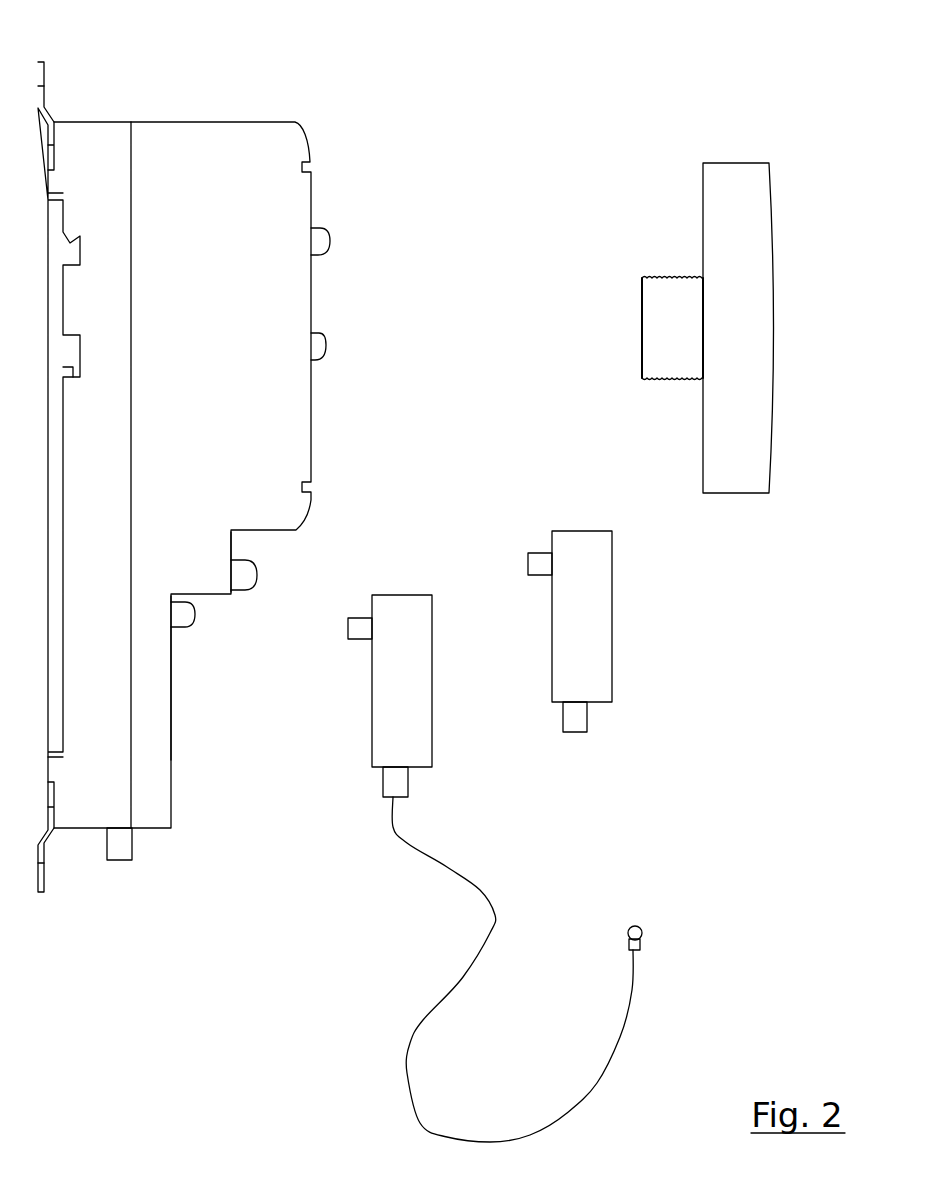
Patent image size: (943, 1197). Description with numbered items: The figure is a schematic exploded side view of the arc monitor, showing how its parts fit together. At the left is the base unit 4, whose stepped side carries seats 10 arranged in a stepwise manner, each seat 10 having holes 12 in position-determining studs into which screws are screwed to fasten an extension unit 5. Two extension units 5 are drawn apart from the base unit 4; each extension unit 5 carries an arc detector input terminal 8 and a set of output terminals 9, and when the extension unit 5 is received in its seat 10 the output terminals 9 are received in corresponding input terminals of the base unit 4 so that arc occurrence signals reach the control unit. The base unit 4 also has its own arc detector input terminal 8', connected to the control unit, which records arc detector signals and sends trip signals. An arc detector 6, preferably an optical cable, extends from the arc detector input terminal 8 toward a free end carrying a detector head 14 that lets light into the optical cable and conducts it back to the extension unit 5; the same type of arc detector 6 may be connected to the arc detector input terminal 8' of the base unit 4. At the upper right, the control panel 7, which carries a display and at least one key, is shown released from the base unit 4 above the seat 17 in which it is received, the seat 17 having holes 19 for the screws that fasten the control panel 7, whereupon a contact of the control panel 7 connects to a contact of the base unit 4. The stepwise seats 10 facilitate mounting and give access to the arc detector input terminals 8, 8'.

The base unit 4 is at (185, 155).
The extension unit 5 is at (422, 623).
The arc detector 6 is at (422, 1123).
The control panel 7 is at (735, 135).
The arc detector input terminal 8 is at (431, 793).
The arc detector input terminal of the base unit 8' is at (153, 868).
The output terminal 9 is at (357, 632).
The seat 10 is at (232, 545).
The hole 12 is at (231, 583).
The detector head 14 is at (627, 928).
The seat 17 is at (312, 228).
The hole 19 is at (311, 360).